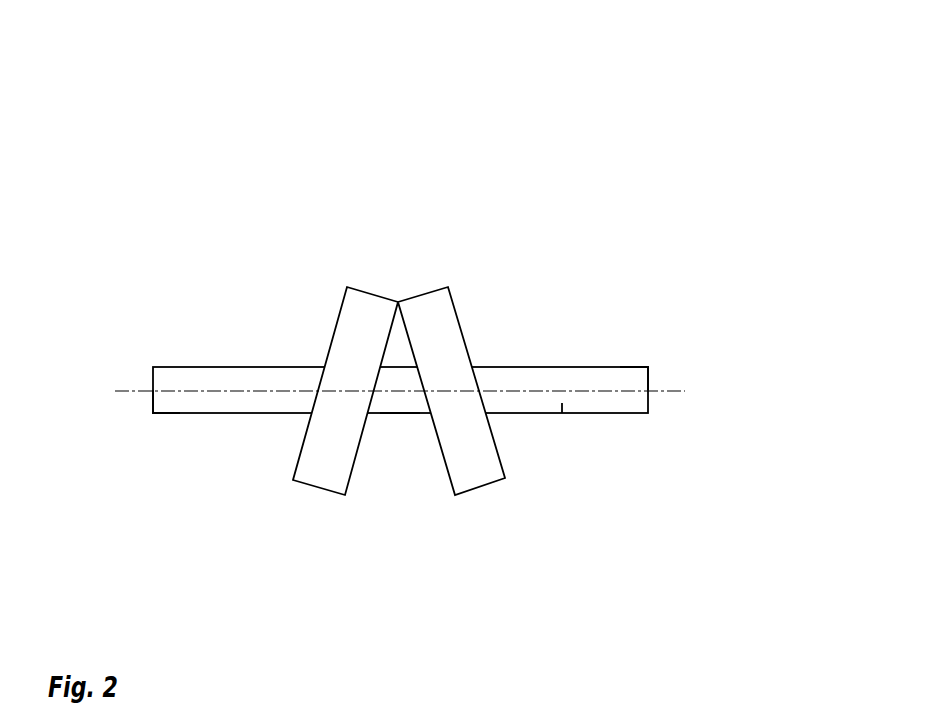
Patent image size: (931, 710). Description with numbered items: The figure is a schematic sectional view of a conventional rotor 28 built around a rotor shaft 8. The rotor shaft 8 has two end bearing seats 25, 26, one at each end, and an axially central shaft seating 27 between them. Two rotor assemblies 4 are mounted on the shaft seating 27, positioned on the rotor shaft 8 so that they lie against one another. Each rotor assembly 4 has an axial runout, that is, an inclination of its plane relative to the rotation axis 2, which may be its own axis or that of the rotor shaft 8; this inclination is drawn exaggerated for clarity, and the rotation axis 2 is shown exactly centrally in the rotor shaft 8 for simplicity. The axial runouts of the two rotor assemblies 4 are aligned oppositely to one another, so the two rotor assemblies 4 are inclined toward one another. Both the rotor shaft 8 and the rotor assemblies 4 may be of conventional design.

The rotation axis 2 is at (663, 390).
The rotor assemblies 4 is at (440, 300).
The rotor shaft 8 is at (562, 403).
The end bearing seat 25 is at (633, 360).
The end bearing seat 26 is at (174, 421).
The shaft seating 27 is at (394, 424).
The rotor 28 is at (796, 93).